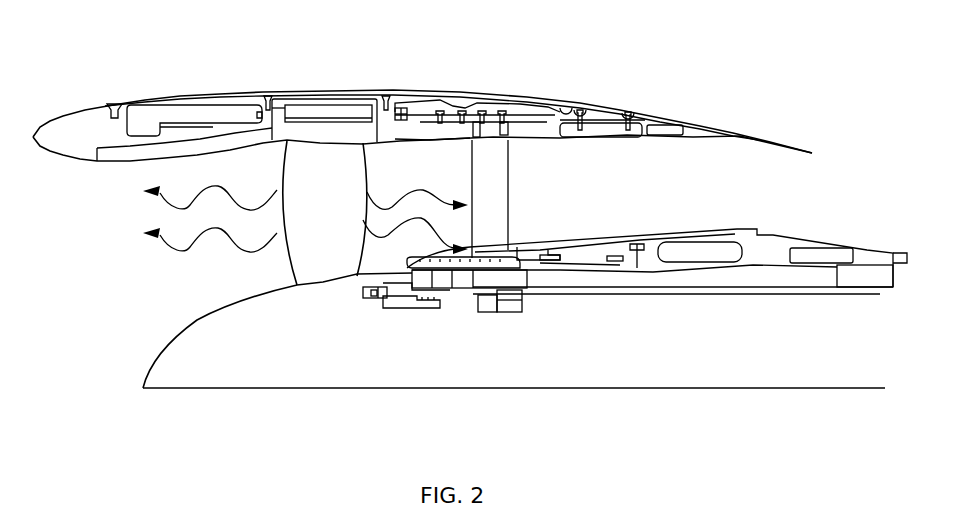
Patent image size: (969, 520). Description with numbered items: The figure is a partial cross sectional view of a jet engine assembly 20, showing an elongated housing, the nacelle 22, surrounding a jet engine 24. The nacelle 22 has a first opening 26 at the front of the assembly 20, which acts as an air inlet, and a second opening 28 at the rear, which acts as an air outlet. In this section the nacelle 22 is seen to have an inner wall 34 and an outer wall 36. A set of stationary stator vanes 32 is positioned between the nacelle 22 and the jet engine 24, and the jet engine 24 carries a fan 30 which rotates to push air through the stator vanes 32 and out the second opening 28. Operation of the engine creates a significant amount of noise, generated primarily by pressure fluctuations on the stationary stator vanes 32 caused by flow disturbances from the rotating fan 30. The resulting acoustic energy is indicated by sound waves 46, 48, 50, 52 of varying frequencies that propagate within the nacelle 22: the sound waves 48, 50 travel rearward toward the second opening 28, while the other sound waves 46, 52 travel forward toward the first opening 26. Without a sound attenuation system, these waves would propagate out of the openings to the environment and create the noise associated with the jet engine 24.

The jet engine assembly 20 is at (133, 424).
The nacelle 22 is at (108, 70).
The jet engine 24 is at (163, 353).
The first opening 26 is at (76, 231).
The second opening 28 is at (863, 201).
The fan 30 is at (282, 170).
The stationary stator vanes 32 is at (508, 210).
The inner wall 34 is at (428, 140).
The outer wall 36 is at (352, 90).
The sound wave 46 is at (198, 183).
The sound wave 48 is at (421, 188).
The sound wave 50 is at (421, 218).
The sound wave 52 is at (192, 252).